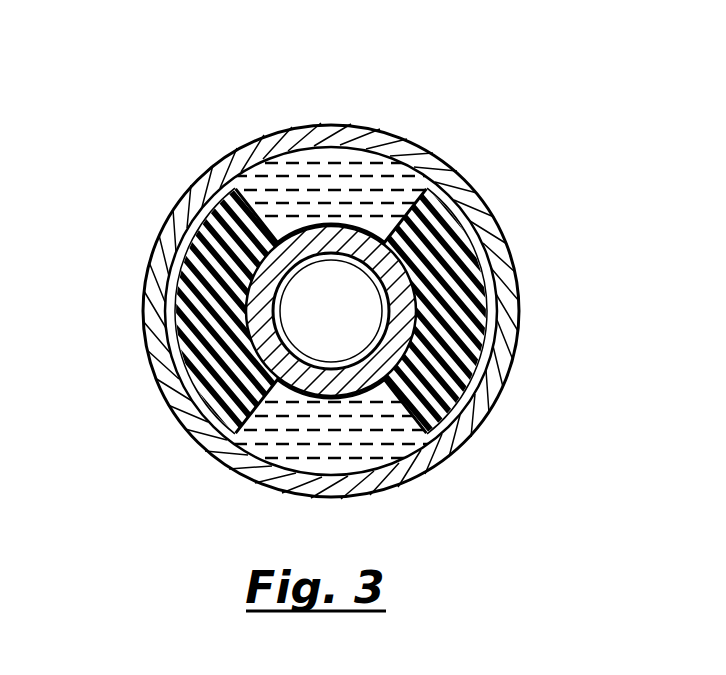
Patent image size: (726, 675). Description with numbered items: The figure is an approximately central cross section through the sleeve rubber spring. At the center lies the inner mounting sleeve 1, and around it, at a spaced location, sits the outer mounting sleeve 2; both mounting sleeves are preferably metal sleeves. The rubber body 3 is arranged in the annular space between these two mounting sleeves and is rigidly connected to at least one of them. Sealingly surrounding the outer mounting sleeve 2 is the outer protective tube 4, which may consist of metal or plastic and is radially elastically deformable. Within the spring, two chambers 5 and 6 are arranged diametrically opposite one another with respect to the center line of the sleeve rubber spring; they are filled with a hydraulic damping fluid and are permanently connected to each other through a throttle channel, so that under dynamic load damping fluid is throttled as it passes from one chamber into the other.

The inner mounting sleeve 1 is at (213, 360).
The outer mounting sleeve 2 is at (477, 323).
The rubber body 3 is at (492, 228).
The outer protective tube 4 is at (238, 155).
The chamber 5 is at (347, 187).
The chamber 6 is at (383, 405).